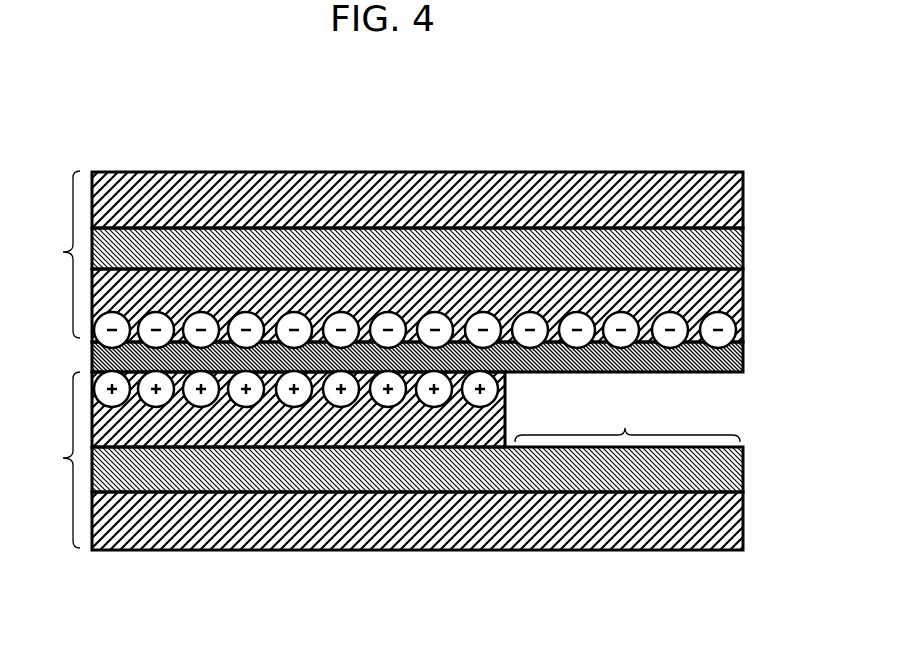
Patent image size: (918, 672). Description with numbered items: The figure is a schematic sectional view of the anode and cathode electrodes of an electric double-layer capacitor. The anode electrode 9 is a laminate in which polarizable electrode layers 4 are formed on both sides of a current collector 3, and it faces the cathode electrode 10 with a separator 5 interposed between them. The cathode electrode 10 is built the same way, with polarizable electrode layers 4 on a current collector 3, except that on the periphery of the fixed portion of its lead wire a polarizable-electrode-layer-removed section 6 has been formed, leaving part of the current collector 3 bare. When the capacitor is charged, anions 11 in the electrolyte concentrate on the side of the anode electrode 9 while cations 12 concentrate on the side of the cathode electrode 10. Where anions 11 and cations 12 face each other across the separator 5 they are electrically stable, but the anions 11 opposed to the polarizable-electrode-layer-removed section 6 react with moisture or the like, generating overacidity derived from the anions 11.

The current collector 3 is at (728, 246).
The polarizable electrode layer 4 is at (728, 198).
The separator 5 is at (728, 353).
The polarizable-electrode-layer-removed section 6 is at (630, 422).
The anode electrode 9 is at (59, 254).
The cathode electrode 10 is at (52, 460).
The anions 11 is at (618, 318).
The cations 12 is at (340, 400).